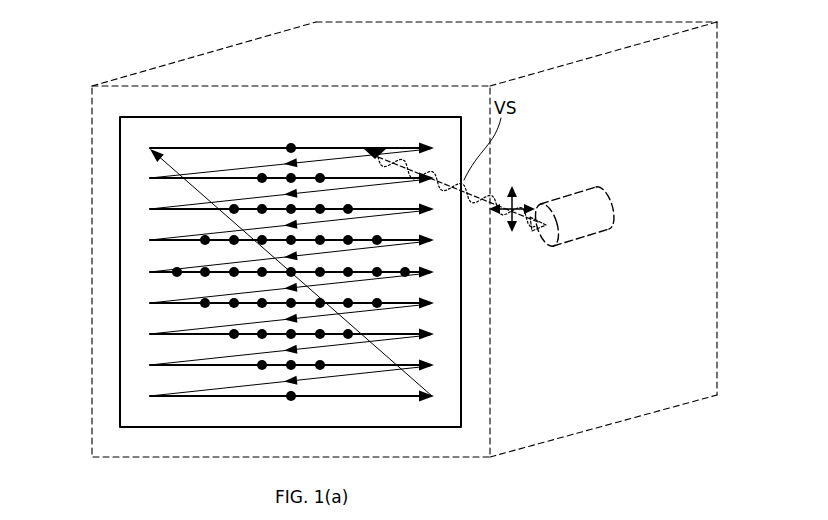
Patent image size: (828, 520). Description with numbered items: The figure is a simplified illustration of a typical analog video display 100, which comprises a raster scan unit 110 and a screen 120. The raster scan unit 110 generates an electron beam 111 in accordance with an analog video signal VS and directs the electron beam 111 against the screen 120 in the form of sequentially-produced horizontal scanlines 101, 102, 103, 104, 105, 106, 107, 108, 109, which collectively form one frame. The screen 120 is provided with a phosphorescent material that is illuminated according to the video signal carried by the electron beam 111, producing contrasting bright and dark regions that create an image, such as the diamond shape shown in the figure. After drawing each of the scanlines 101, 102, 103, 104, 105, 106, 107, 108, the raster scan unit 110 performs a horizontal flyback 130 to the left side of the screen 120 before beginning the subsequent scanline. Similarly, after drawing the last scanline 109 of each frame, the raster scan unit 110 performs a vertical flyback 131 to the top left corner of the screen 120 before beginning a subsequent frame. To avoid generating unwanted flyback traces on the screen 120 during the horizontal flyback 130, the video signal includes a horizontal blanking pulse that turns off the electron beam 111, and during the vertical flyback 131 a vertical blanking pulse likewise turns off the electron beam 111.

The analog video display 100 is at (135, 44).
The horizontal scanline 101 is at (180, 148).
The horizontal scanline 102 is at (174, 178).
The horizontal scanline 103 is at (174, 209).
The horizontal scanline 104 is at (174, 240).
The horizontal scanline 105 is at (174, 272).
The horizontal scanline 106 is at (174, 303).
The horizontal scanline 107 is at (174, 334).
The horizontal scanline 108 is at (174, 365).
The horizontal scanline 109 is at (174, 396).
The raster scan unit 110 is at (598, 185).
The electron beam 111 is at (477, 193).
The screen 120 is at (378, 117).
The horizontal flyback 130 is at (358, 217).
The vertical flyback 131 is at (395, 359).